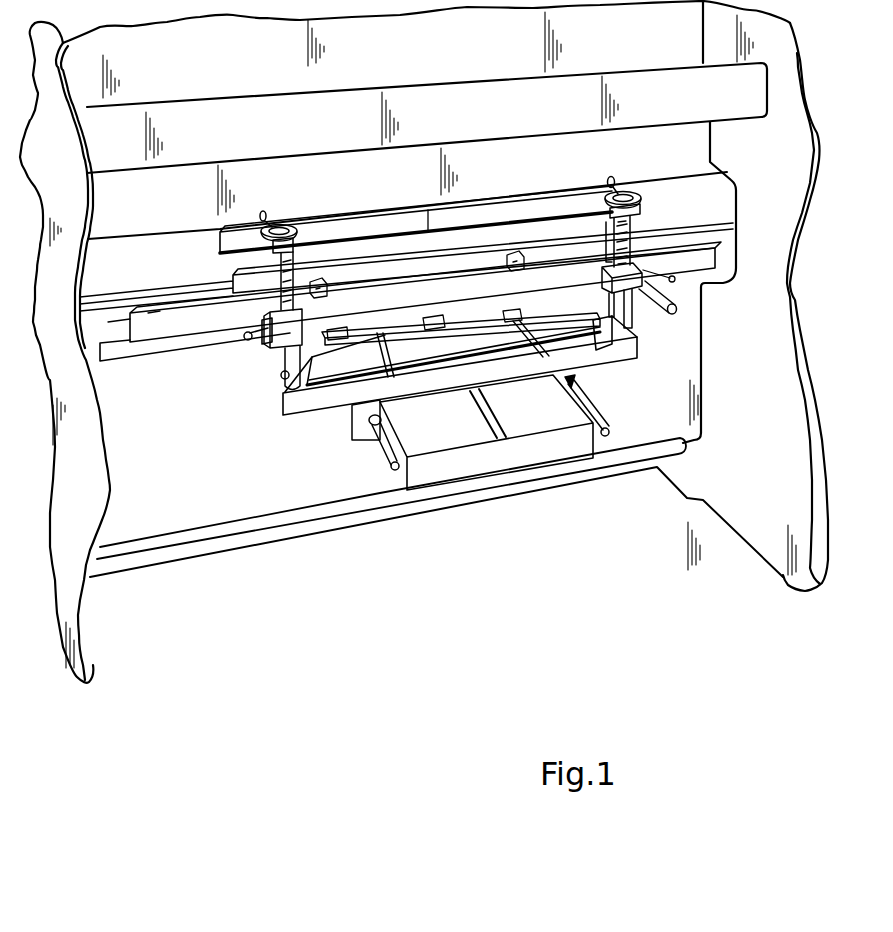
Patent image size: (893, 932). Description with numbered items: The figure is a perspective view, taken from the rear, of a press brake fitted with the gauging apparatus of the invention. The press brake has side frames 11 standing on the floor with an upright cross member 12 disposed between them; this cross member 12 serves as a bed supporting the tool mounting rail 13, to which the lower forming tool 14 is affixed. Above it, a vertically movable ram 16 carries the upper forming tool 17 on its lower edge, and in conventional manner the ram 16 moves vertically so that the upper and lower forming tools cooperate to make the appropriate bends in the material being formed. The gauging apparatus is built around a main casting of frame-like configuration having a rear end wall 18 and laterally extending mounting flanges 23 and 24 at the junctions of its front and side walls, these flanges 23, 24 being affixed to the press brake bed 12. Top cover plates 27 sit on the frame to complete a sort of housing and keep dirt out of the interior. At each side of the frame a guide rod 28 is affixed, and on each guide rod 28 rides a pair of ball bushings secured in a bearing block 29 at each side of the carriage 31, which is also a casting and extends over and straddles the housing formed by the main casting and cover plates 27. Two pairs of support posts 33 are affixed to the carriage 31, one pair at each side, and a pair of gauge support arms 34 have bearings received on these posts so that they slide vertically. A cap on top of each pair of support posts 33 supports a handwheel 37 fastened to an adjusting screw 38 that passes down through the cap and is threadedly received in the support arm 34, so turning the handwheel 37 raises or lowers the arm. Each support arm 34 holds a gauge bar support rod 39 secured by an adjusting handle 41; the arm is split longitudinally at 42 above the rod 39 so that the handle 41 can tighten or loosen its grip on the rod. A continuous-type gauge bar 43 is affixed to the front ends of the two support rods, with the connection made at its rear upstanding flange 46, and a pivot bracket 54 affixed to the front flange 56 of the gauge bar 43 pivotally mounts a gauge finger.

The side frames 11 is at (82, 499).
The cross member 12 is at (180, 518).
The tool mounting rail 13 is at (107, 345).
The lower forming tool 14 is at (240, 288).
The ram 16 is at (183, 210).
The upper forming tool 17 is at (225, 243).
The rear end wall 18 is at (427, 482).
The mounting flange 23 is at (340, 347).
The mounting flange 24 is at (522, 308).
The top cover plates 27 is at (457, 432).
The guide rod 28 is at (391, 468).
The bearing block 29 is at (357, 427).
The carriage 31 is at (605, 360).
The support posts 33 is at (603, 228).
The gauge support arm 34 is at (290, 335).
The handwheel 37 is at (285, 226).
The adjusting screw 38 is at (640, 231).
The gauge bar support rod 39 is at (278, 358).
The adjusting handle 41 is at (677, 277).
The split 42 is at (268, 312).
The gauge bar 43 is at (112, 328).
The rear upstanding flange 46 is at (167, 330).
The pivot bracket 54 is at (318, 277).
The front flange 56 is at (150, 313).